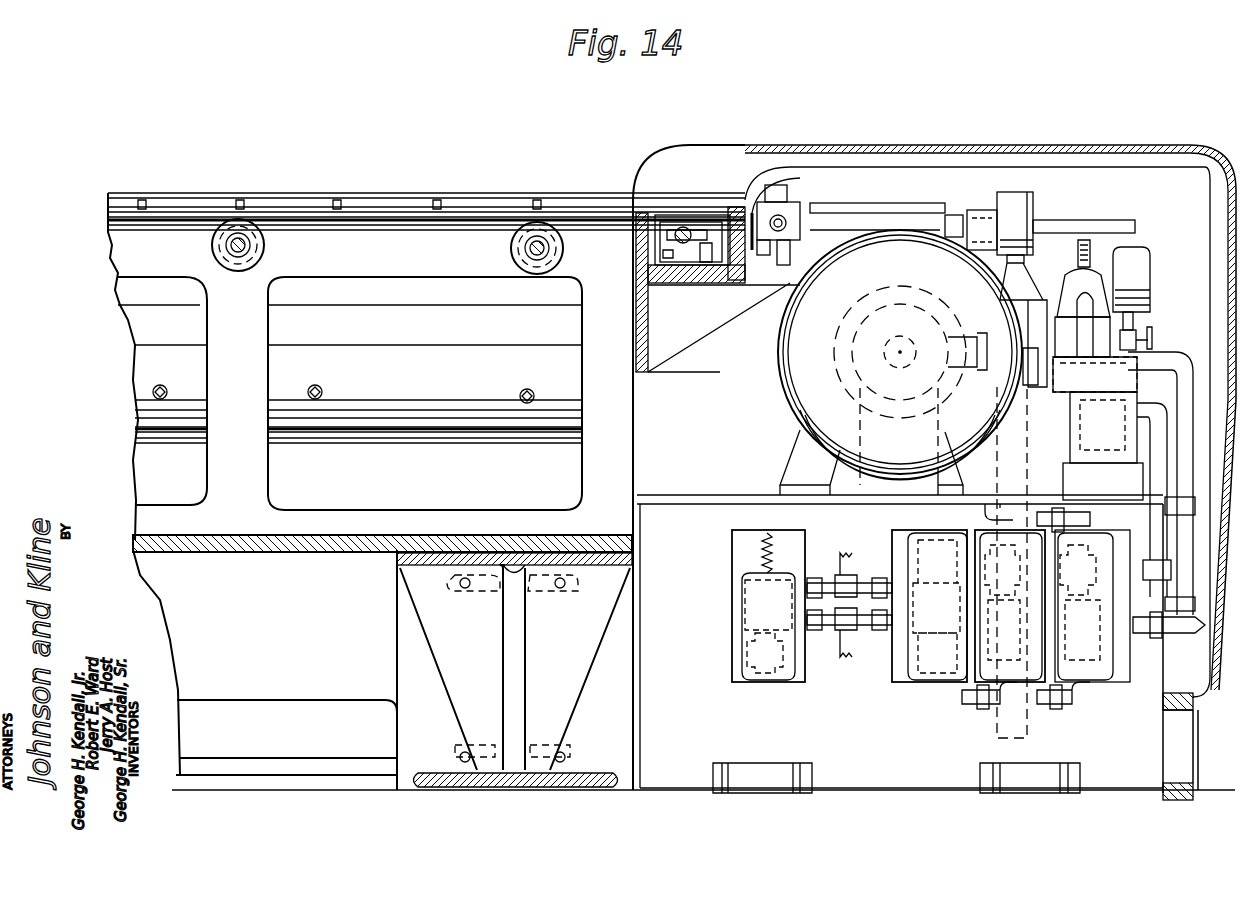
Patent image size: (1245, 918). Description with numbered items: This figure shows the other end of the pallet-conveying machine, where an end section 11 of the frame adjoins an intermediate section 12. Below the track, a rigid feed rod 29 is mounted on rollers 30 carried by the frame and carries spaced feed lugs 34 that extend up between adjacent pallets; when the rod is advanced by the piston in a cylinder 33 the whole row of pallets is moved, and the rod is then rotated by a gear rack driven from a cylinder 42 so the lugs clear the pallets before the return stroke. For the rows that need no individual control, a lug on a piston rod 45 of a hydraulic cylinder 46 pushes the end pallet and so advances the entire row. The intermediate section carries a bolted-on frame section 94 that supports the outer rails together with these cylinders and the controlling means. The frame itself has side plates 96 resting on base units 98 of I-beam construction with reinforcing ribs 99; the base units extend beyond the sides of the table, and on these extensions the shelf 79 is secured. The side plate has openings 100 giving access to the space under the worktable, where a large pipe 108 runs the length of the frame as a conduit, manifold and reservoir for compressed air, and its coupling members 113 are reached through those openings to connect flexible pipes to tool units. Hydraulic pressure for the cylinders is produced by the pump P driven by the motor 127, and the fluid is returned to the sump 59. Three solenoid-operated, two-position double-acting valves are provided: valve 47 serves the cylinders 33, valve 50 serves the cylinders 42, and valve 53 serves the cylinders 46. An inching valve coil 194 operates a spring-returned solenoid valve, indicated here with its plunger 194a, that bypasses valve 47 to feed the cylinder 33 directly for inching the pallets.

The end section 11 is at (1075, 145).
The intermediate section 12 is at (299, 189).
The feed lug 34 is at (145, 200).
The feed rod 29 is at (358, 231).
The roller 30 is at (265, 247).
The cylinder 33 is at (920, 210).
The cylinder 42 is at (755, 170).
The hydraulic cylinder 46 is at (667, 215).
The piston rod 45 is at (685, 228).
The frame section 94 is at (690, 345).
The side plate 96 is at (210, 462).
The opening 100 is at (283, 482).
The pipe 108 is at (418, 432).
The coupling member 113 is at (322, 389).
The shelf 79 is at (292, 553).
The base unit 98 is at (388, 640).
The reinforcing rib 99 is at (520, 655).
The pump P is at (839, 347).
The motor 127 is at (792, 405).
The sump 59 is at (705, 515).
The solenoid valve plunger 194a is at (752, 606).
The inching valve coil 194 is at (745, 660).
The double-acting valve 47 is at (925, 625).
The double-acting valve 50 is at (985, 620).
The double-acting valve 53 is at (1090, 622).